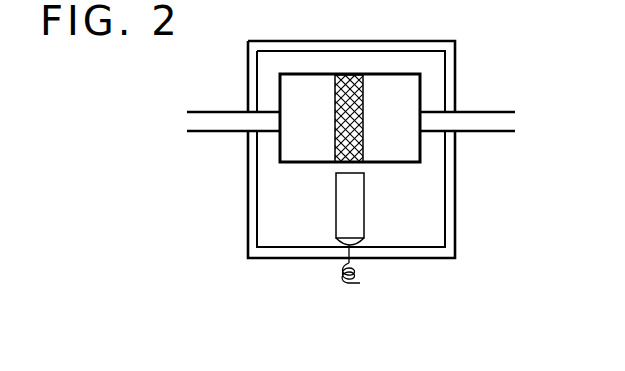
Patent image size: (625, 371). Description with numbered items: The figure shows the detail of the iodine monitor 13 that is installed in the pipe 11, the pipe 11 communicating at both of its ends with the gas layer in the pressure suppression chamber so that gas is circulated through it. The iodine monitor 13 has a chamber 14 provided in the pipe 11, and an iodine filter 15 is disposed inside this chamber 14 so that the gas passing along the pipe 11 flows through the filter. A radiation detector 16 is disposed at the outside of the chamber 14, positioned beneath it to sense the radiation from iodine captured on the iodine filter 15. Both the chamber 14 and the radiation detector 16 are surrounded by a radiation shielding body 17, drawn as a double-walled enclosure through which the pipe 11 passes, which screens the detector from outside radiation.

The pipe 11 is at (488, 123).
The iodine monitor 13 is at (458, 44).
The chamber 14 is at (285, 92).
The iodine filter 15 is at (343, 143).
The radiation detector 16 is at (355, 205).
The radiation shielding body 17 is at (456, 206).